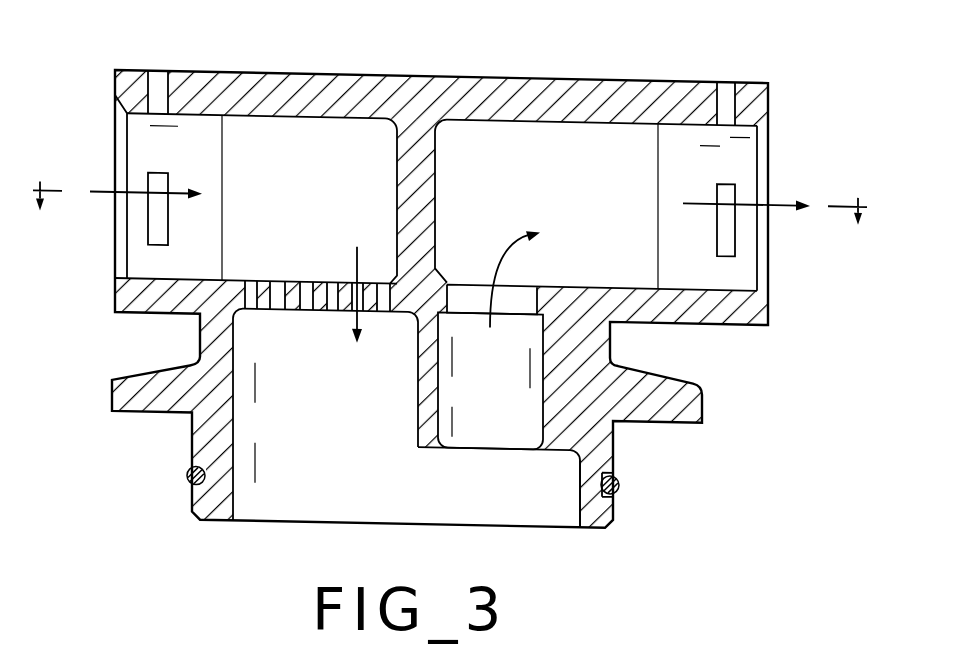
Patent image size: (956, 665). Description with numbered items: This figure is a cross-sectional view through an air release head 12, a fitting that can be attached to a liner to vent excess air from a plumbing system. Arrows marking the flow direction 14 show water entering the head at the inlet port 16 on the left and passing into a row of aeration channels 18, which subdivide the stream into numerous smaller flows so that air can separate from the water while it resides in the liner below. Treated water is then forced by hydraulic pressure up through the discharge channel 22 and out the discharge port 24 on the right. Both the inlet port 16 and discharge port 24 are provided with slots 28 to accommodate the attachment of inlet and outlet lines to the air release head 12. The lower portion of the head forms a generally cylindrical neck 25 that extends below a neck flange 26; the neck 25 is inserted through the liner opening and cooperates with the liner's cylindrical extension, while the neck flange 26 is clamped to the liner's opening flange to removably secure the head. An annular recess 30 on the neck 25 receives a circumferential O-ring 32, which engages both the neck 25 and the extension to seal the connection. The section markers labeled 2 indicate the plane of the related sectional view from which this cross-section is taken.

The air release head 12 is at (535, 48).
The flow direction 14 is at (100, 192).
The inlet port 16 is at (114, 118).
The aeration channels 18 is at (330, 282).
The discharge channel 22 is at (483, 421).
The discharge port 24 is at (770, 134).
The neck 25 is at (596, 510).
The neck flange 26 is at (135, 395).
The slots 28 is at (159, 78).
The annular recess 30 is at (205, 520).
The O-ring 32 is at (185, 477).
The section line 2- 2 is at (450, 221).